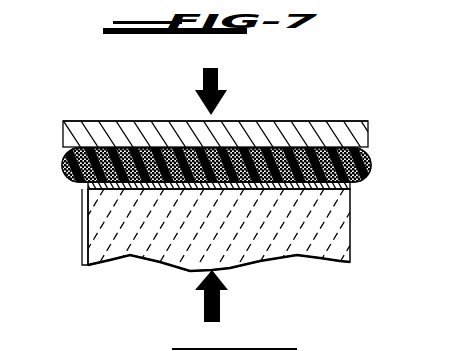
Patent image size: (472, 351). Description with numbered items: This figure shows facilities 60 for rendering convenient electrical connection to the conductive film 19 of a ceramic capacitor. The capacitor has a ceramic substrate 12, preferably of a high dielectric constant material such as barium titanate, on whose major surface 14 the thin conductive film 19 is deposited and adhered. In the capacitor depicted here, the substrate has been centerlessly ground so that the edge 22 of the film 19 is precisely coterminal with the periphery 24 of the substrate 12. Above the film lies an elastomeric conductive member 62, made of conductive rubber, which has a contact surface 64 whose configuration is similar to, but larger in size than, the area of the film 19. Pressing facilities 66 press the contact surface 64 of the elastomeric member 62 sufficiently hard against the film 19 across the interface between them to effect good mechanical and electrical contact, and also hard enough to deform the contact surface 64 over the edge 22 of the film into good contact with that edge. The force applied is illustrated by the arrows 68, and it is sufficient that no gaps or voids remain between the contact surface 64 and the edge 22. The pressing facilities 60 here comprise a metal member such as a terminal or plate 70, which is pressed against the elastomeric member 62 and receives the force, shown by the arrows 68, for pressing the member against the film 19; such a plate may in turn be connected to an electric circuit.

The facilities for rendering electrical connection 60 is at (213, 122).
The plate 70 is at (313, 127).
The pressing facilities 66 is at (111, 109).
The elastomeric conductive member 62 is at (370, 172).
The contact surface 64 is at (132, 160).
The arrows 68 is at (220, 69).
The edge of the film 22 is at (61, 177).
The film 19 is at (349, 190).
The major surface 14 is at (263, 190).
The ceramic substrate 12 is at (213, 230).
The periphery of the substrate 24 is at (82, 229).